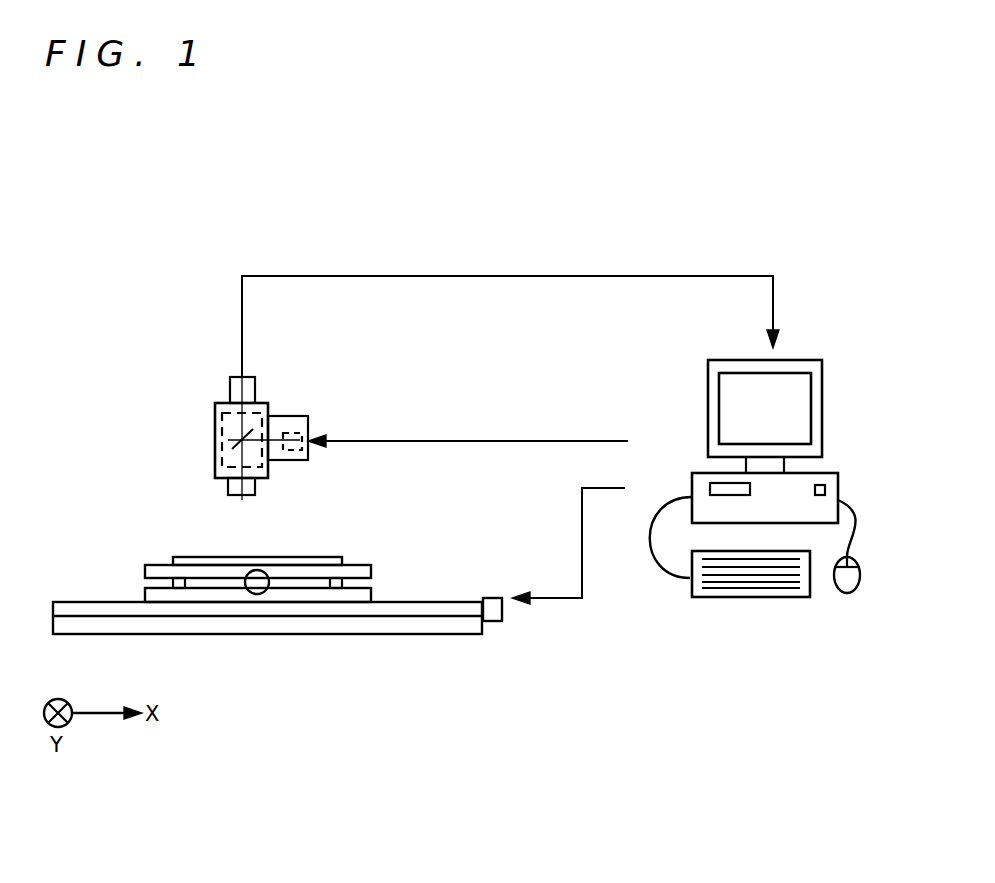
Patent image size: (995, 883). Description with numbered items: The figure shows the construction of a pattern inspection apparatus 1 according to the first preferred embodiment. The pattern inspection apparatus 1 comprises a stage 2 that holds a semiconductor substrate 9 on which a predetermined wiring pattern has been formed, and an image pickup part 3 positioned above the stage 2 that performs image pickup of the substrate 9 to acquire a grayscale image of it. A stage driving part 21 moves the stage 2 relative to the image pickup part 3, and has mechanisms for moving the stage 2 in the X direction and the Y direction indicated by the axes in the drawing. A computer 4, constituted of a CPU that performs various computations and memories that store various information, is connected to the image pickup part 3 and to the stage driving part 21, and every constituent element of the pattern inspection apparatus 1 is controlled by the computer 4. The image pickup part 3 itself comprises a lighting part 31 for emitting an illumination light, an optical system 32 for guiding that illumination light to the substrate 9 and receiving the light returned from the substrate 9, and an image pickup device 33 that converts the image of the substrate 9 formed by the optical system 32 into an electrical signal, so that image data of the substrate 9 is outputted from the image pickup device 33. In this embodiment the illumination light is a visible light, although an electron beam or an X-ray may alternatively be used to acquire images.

The pattern inspection apparatus 1 is at (197, 197).
The stage 2 is at (150, 565).
The image pickup part 3 is at (209, 385).
The computer 4 is at (809, 340).
The semiconductor substrate 9 is at (305, 558).
The stage driving part 21 is at (399, 562).
The lighting part 31 is at (296, 423).
The optical system 32 is at (216, 440).
The image pickup device 33 is at (256, 392).